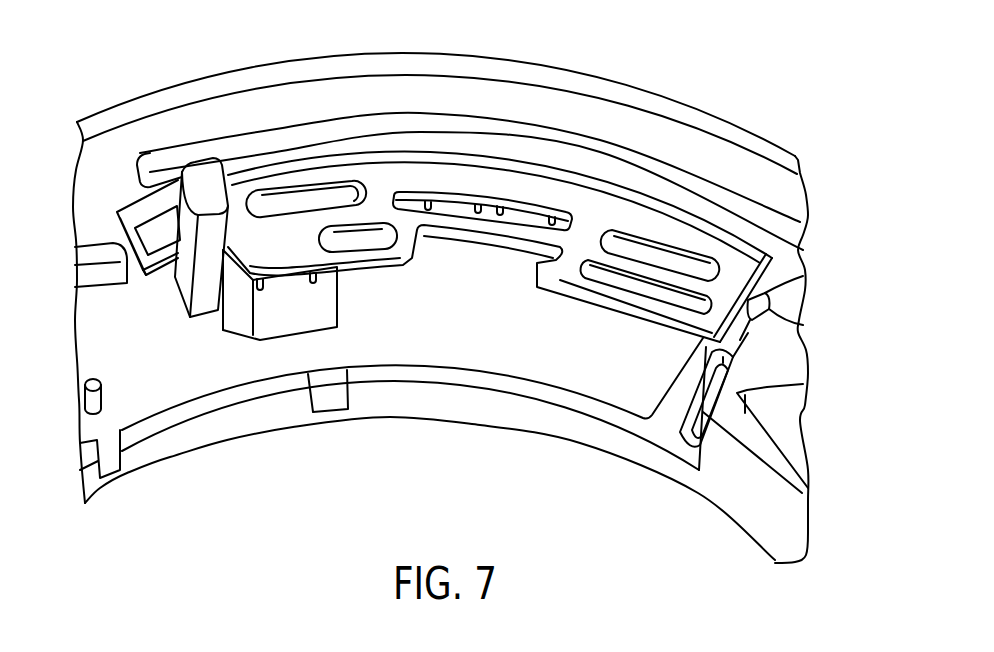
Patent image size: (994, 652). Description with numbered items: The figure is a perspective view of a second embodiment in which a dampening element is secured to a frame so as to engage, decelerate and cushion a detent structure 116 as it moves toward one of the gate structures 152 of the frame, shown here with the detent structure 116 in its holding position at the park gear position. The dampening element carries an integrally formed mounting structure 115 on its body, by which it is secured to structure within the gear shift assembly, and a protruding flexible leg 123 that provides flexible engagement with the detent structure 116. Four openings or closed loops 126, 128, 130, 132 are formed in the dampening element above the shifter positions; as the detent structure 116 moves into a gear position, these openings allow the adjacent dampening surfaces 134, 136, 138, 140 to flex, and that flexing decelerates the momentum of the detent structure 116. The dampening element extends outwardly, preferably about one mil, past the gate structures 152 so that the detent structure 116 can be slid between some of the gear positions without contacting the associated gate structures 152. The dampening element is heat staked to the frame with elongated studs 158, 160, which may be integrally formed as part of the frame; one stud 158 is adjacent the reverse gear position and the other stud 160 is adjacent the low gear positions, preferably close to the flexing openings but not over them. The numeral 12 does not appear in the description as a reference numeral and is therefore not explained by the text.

The housing 12 is at (606, 80).
The mounting structure 115 is at (313, 282).
The detent structure 116 is at (200, 172).
The protruding flexible leg 123 is at (540, 235).
The opening or closed loop 126 is at (152, 235).
The opening or closed loop 128 is at (340, 240).
The opening or closed loop 130 is at (405, 200).
The opening or closed loop 132 is at (688, 310).
The dampening surface 134 is at (150, 280).
The dampening surface 136 is at (355, 268).
The dampening surface 138 is at (502, 238).
The dampening surface 140 is at (620, 303).
The gate structure 152 is at (459, 313).
The elongated stud 158 is at (278, 200).
The elongated stud 160 is at (667, 257).